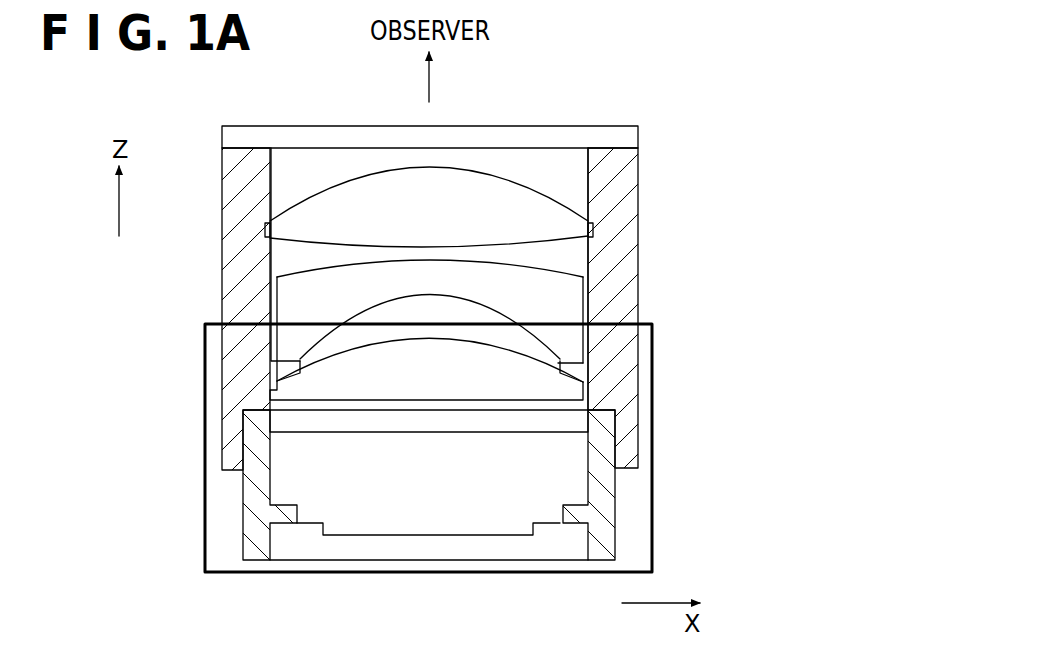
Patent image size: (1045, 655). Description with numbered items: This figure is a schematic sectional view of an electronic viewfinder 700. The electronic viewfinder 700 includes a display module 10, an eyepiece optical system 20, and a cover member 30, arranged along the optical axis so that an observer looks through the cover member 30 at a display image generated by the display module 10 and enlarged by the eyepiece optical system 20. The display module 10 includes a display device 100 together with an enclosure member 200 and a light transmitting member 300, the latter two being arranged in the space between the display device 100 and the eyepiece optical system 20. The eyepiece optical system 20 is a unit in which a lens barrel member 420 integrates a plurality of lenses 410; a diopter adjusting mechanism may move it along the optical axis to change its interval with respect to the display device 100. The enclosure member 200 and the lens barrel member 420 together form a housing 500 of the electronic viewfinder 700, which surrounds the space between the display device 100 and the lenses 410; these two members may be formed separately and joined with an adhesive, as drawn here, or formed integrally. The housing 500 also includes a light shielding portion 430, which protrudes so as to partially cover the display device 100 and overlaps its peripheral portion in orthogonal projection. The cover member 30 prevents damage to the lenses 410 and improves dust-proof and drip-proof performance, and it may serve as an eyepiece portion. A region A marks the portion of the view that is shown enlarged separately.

The electronic viewfinder 700 is at (800, 127).
The cover member 30 is at (625, 136).
The eyepiece optical system 20 is at (735, 255).
The lenses 410 is at (563, 230).
The lens barrel member 420 is at (607, 343).
The light shielding portion 430 is at (285, 372).
The housing 500 is at (130, 300).
The display module 10 is at (735, 417).
The enclosure member 200 is at (607, 483).
The light transmitting member 300 is at (572, 418).
The display device 100 is at (577, 543).
The region A is at (204, 522).